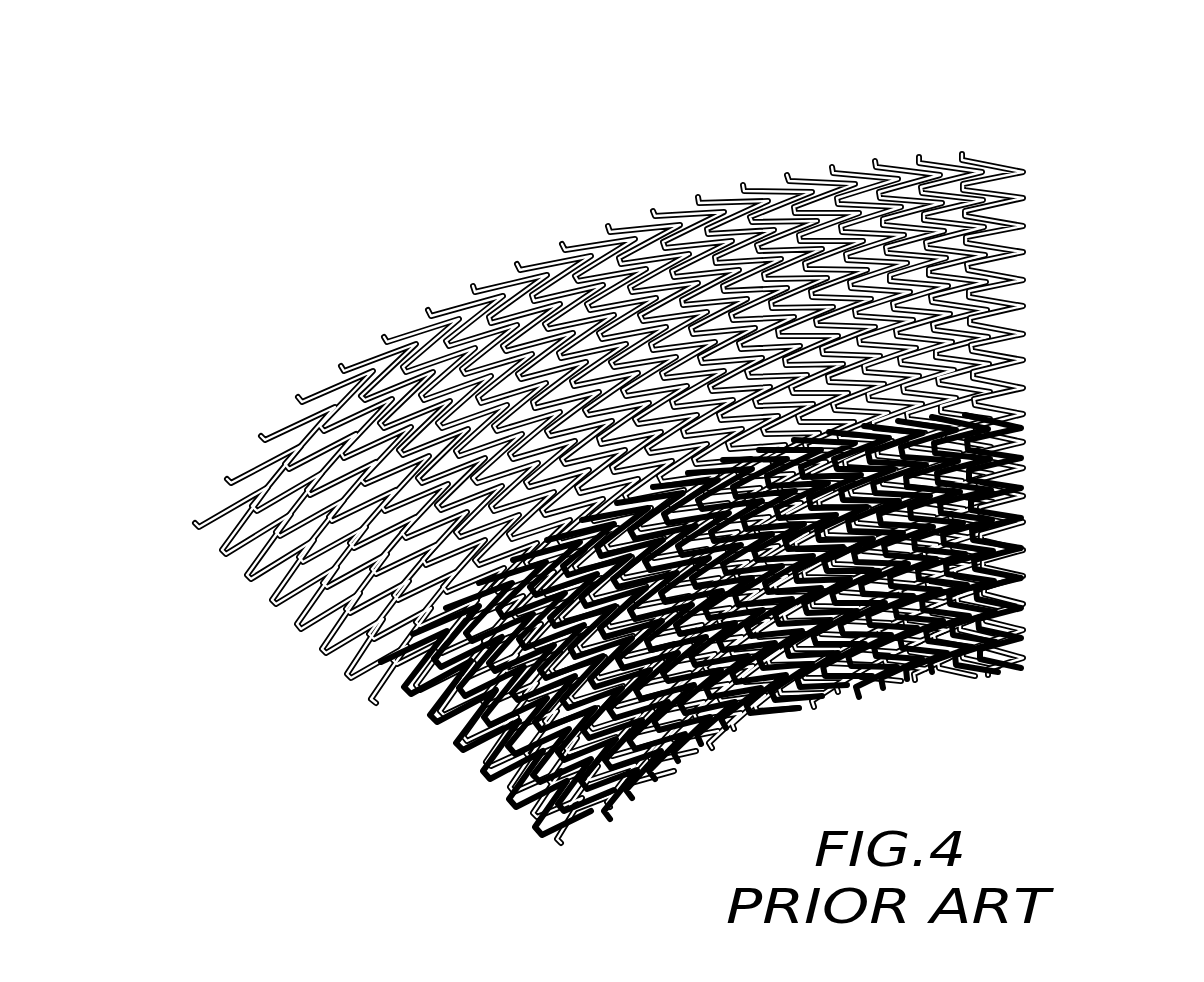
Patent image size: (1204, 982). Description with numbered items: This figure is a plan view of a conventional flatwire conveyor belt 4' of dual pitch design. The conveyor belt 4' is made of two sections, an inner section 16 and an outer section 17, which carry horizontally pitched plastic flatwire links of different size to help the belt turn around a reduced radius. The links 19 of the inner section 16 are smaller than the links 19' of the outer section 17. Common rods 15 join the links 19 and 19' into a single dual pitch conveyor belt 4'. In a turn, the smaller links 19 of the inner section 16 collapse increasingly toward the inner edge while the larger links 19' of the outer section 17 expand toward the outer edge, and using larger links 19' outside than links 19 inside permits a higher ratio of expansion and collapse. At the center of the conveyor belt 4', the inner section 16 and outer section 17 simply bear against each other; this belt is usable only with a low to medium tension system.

The conveyor belt 4' is at (763, 114).
The common rods 15 is at (1010, 604).
The inner section 16 is at (1010, 494).
The outer section 17 is at (1005, 290).
The links 19 is at (648, 636).
The links 19' is at (590, 500).